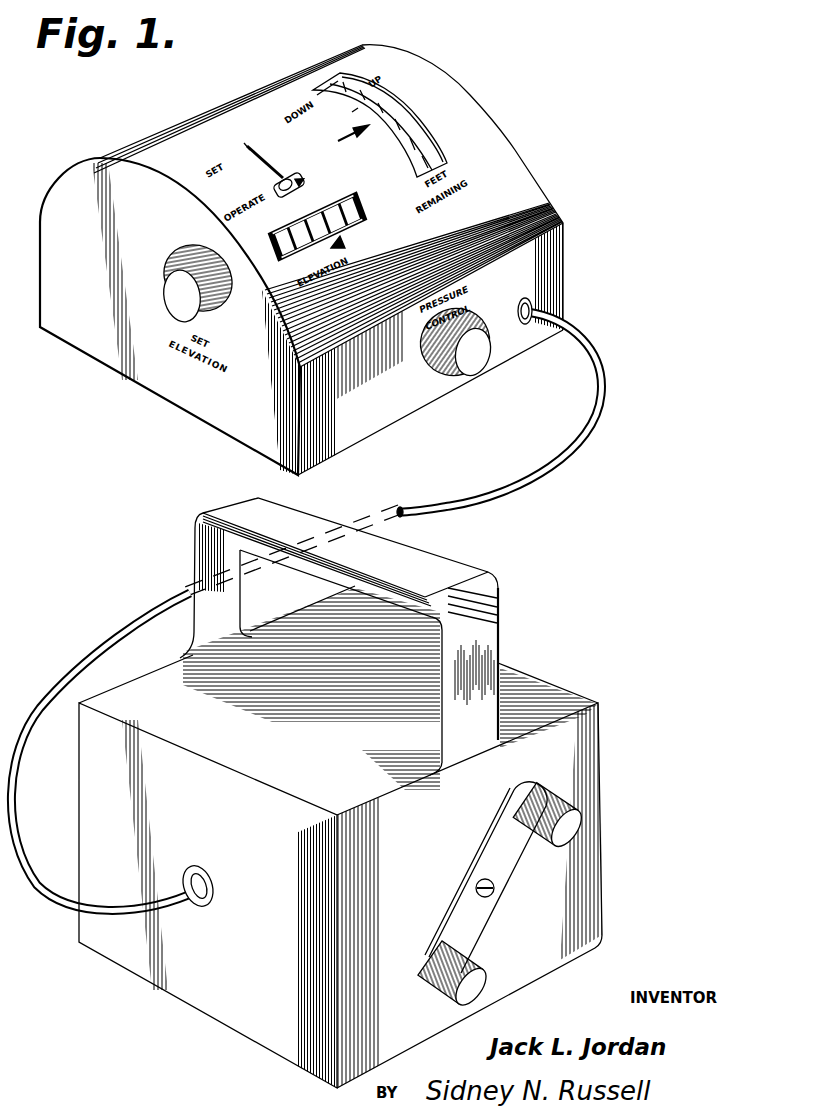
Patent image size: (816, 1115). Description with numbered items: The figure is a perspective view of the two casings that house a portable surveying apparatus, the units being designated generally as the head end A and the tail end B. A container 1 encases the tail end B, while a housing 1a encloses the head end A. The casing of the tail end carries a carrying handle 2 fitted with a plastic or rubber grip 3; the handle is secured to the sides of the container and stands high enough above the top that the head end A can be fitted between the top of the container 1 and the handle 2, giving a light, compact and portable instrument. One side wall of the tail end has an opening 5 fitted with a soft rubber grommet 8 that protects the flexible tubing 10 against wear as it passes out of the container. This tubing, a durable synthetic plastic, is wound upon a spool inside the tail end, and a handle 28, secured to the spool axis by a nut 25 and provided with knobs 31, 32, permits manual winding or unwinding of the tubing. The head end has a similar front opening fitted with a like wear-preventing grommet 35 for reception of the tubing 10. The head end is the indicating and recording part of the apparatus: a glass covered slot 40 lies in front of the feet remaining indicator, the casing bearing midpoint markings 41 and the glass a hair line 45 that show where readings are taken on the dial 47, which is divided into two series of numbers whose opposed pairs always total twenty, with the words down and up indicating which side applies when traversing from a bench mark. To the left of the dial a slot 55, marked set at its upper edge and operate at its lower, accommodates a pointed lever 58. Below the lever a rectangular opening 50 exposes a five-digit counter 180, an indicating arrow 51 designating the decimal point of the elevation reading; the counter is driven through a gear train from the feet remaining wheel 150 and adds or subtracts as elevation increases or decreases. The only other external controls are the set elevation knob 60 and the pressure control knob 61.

The container 1 is at (213, 1005).
The housing 1a is at (207, 408).
The carrying handle 2 is at (492, 627).
The grip 3 is at (438, 560).
The opening 5 is at (210, 876).
The grommet 8 is at (193, 871).
The flexible tubing 10 is at (605, 380).
The nut 25 is at (489, 896).
The handle 28 is at (497, 843).
The knob 31 is at (577, 818).
The knob 32 is at (475, 995).
The grommet 35 is at (538, 307).
The glass covered slot 40 is at (423, 134).
The midpoint markings 41 is at (400, 116).
The hair line 45 is at (383, 132).
The dial 47 is at (357, 103).
The rectangular opening 50 is at (334, 218).
The indicating arrow 51 is at (342, 242).
The slot 55 is at (264, 158).
The lever 58 is at (288, 177).
The knob 60 is at (173, 283).
The manual control knob 61 is at (473, 362).
The feet remaining wheel 150 is at (438, 150).
The counter 180 is at (351, 213).
The head end A is at (301, 260).
The tail end B is at (362, 837).